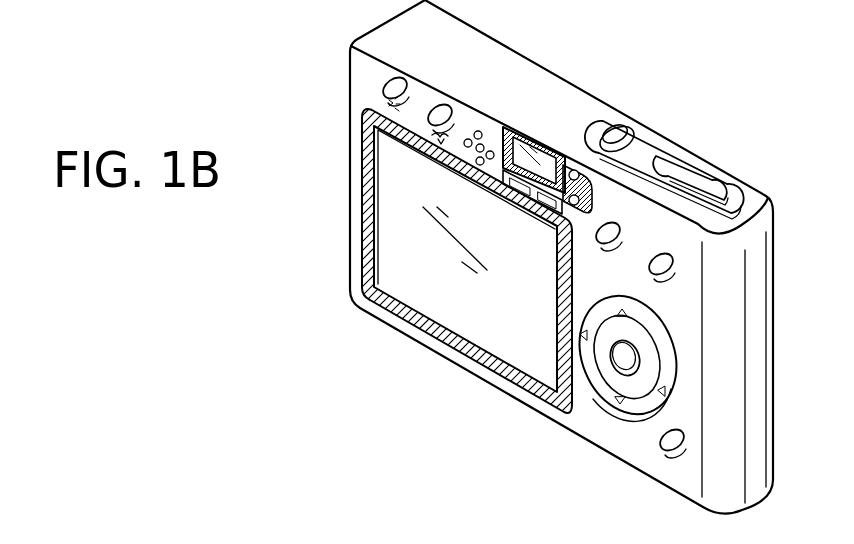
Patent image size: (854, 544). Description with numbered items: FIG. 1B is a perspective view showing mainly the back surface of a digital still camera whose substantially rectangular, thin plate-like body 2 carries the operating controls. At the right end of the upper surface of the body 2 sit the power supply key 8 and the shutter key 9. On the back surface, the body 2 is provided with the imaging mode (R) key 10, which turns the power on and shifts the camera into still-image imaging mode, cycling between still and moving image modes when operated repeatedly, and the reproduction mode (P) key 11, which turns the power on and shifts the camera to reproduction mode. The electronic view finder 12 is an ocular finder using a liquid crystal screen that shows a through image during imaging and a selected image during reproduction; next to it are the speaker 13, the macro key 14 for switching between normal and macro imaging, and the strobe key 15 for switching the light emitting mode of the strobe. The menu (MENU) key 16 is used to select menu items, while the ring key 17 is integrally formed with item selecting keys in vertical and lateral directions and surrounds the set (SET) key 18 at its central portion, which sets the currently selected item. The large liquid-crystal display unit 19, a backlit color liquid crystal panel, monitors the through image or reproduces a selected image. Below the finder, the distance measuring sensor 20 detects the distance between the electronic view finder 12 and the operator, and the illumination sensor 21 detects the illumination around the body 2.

The body 2 is at (773, 285).
The power supply key 8 is at (614, 123).
The shutter key 9 is at (684, 173).
The imaging mode (R) key 10 is at (660, 267).
The reproduction mode (P) key 11 is at (603, 234).
The electronic view finder (EVF) 12 is at (540, 157).
The speaker 13 is at (485, 134).
The macro key 14 is at (441, 105).
The strobe key 15 is at (399, 80).
The menu (MENU) key 16 is at (680, 438).
The ring key 17 is at (638, 324).
The set (SET) key 18 is at (646, 359).
The liquid-crystal display unit 19 is at (442, 302).
The distance measuring sensor 20 is at (520, 178).
The illumination sensor 21 is at (567, 165).